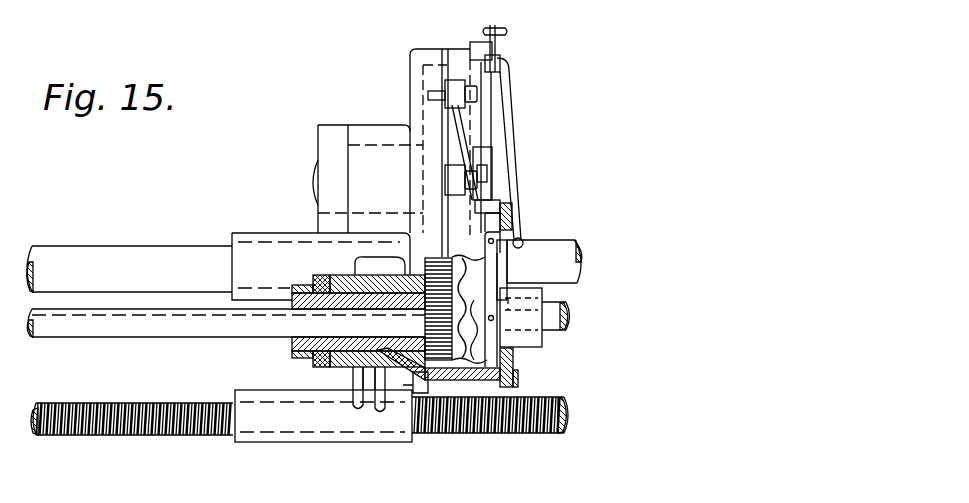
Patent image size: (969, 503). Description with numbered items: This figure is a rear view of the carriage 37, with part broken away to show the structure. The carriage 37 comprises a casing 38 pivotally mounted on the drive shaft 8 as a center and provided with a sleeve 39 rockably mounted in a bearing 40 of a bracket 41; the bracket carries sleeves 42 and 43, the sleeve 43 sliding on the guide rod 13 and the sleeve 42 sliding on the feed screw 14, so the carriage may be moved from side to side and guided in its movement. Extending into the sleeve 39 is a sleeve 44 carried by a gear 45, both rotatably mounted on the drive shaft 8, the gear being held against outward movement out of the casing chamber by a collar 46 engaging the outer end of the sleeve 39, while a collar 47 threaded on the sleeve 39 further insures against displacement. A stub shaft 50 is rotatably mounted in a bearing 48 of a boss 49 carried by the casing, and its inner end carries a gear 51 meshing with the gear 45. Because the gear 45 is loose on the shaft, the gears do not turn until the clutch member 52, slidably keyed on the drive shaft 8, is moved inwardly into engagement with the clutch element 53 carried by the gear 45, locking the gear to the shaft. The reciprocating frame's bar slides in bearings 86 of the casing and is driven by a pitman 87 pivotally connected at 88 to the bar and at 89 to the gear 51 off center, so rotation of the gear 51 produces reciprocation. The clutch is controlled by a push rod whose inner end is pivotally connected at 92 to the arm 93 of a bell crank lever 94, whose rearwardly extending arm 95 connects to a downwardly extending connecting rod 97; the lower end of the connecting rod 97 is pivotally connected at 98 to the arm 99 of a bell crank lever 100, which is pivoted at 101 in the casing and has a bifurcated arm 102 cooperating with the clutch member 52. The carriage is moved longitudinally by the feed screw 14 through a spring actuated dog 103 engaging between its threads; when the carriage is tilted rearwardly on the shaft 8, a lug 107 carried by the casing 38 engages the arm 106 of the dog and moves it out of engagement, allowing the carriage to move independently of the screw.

The drive shaft 8 is at (94, 328).
The guide rod 13 is at (129, 269).
The feed screw 14 is at (536, 430).
The carriage 37 is at (423, 67).
The casing 38 is at (410, 110).
The sleeve 39 is at (348, 353).
The bearing 40 is at (385, 385).
The bracket 41 is at (364, 385).
The sleeve 42 is at (323, 416).
The sleeve 43 is at (321, 266).
The sleeve 44 is at (293, 346).
The gear 45 is at (513, 356).
The collar 46 is at (306, 356).
The collar 47 is at (346, 355).
The bearing 48 is at (345, 148).
The boss 49 is at (385, 164).
The stub shaft 50 is at (318, 215).
The gear 51 is at (420, 272).
The clutch member 52 is at (532, 323).
The clutch element 53 is at (456, 309).
The bearings 86 is at (519, 158).
The pitman 87 is at (466, 132).
The pivotal connection 88 is at (470, 186).
The pivotal connection 89 is at (470, 102).
The pivotal connection 92 is at (500, 28).
The arm 93 is at (496, 42).
The bell crank lever 94 is at (501, 54).
The arm 95 is at (497, 67).
The connecting rod 97 is at (493, 162).
The pivotal connection 98 is at (503, 240).
The arm 99 is at (524, 243).
The bell crank lever 100 is at (583, 260).
The pivot 101 is at (515, 216).
The bifurcated arm 102 is at (505, 276).
The spring actuated dog 103 is at (458, 425).
The arm 106 is at (430, 382).
The lug 107 is at (491, 425).